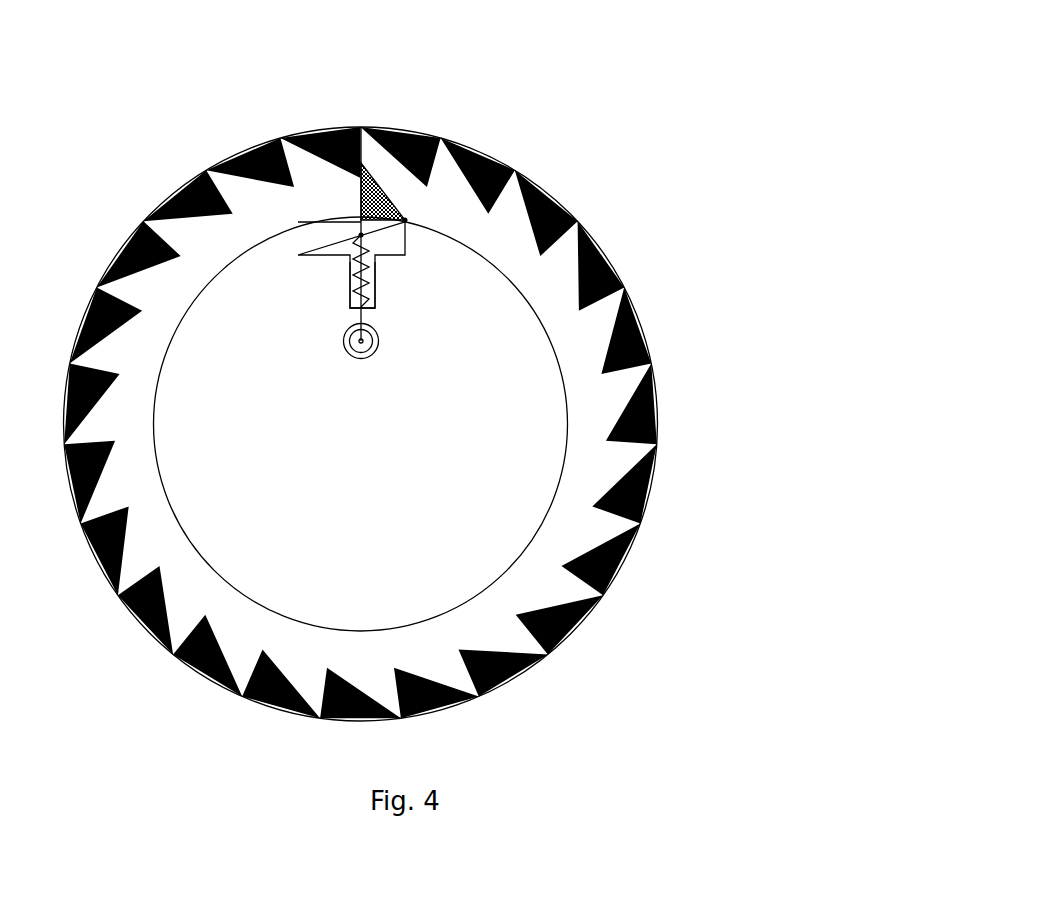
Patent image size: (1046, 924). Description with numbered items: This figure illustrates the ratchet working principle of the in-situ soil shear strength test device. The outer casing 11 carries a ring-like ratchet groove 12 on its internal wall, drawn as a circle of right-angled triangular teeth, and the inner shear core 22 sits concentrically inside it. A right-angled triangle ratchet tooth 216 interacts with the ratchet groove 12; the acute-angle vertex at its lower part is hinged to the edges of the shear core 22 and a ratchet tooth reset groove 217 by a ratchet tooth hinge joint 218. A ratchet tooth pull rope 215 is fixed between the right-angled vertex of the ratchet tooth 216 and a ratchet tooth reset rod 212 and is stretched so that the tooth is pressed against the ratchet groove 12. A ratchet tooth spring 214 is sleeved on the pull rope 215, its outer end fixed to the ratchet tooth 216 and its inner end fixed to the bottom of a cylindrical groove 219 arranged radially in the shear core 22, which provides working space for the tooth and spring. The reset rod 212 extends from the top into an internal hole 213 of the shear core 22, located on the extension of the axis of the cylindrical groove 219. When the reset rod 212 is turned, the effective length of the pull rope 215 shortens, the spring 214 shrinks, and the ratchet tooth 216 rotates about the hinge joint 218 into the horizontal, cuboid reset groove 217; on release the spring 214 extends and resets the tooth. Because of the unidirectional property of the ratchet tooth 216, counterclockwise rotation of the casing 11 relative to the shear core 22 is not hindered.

The casing 11 is at (628, 548).
The shear core 22 is at (517, 465).
The ratchet groove 12 is at (363, 318).
The ratchet tooth reset rod 212 is at (378, 352).
The internal hole 213 is at (379, 343).
The ratchet tooth spring 214 is at (368, 281).
The ratchet tooth pull rope 215 is at (379, 340).
The ratchet tooth 216 is at (378, 178).
The ratchet tooth reset groove 217 is at (320, 242).
The ratchet tooth hinge joint 218 is at (406, 219).
The cylindrical groove 219 is at (352, 295).